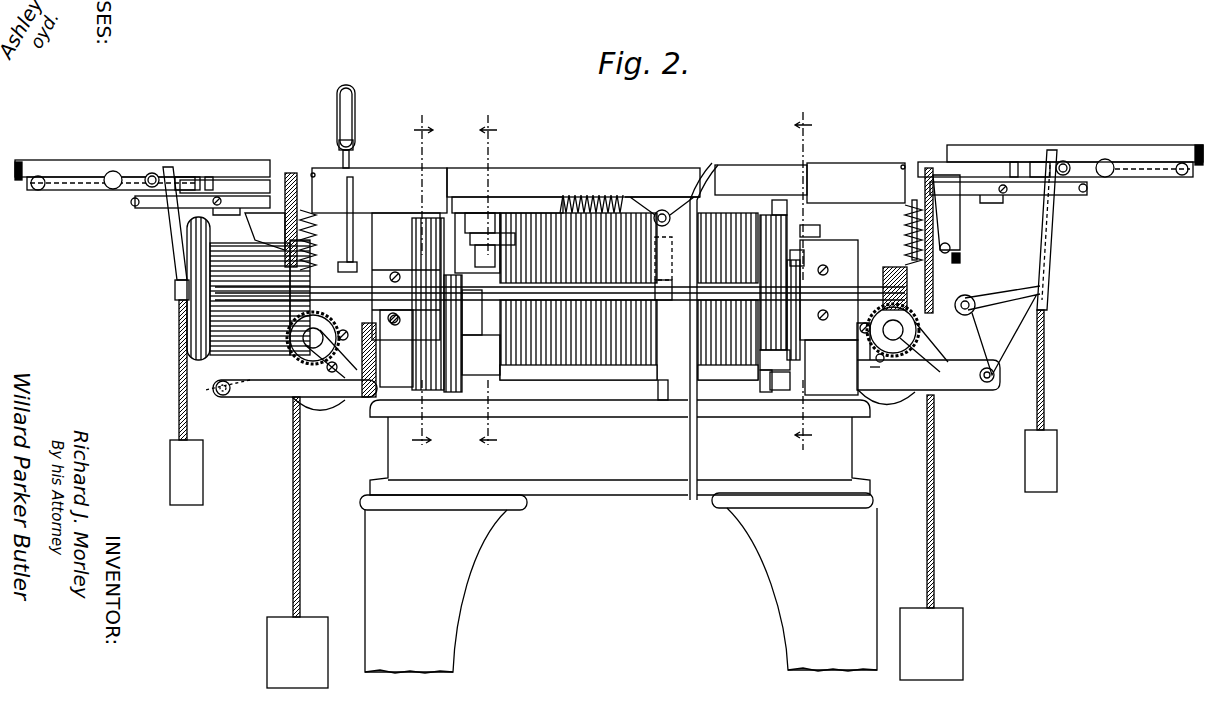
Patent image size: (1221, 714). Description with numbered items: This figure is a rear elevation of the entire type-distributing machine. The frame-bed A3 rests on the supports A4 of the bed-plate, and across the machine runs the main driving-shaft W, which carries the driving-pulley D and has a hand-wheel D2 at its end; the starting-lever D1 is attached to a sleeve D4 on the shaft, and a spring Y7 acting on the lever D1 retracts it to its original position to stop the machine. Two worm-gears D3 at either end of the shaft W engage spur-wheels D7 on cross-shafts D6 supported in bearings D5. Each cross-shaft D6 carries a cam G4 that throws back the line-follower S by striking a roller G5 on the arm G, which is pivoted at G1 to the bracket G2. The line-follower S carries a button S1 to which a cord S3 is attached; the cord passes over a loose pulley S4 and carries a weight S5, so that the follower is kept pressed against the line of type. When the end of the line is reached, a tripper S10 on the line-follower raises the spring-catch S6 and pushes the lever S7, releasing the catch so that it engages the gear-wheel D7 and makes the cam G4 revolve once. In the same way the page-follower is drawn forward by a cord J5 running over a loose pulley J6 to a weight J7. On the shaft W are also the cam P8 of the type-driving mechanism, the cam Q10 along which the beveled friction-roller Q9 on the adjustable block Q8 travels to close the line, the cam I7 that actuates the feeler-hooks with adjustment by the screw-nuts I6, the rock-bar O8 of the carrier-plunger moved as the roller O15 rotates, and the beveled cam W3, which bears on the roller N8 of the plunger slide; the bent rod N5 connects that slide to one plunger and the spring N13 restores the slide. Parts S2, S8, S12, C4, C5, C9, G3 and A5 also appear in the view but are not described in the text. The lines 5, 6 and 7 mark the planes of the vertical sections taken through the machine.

The line-follower S is at (250, 180).
The button S1 is at (36, 191).
The lower rail S2 is at (105, 192).
The cord S3 is at (87, 178).
The loose pulley S4 is at (183, 180).
The weight S5 is at (170, 468).
The spring-catch S6 is at (152, 172).
The lever S7 is at (262, 231).
The pivot S8 is at (951, 247).
The tripper S10 is at (212, 180).
The lever S12 is at (915, 377).
The pin C4 is at (131, 203).
The bar C5 is at (140, 210).
The bracket C9 is at (608, 202).
The arm G is at (167, 256).
The pivot G1 is at (233, 397).
The bracket G2 is at (290, 398).
The pivot G3 is at (220, 400).
The cam G4 is at (318, 410).
The roller G5 is at (1002, 330).
The driving-pulley D is at (250, 299).
The starting-lever D1 is at (338, 92).
The hand-wheel D2 is at (196, 270).
The worm-gear D3 is at (887, 267).
The sleeve D4 is at (360, 281).
The bearing D5 is at (368, 398).
The cross-shaft D6 is at (305, 346).
The spur-wheel D7 is at (335, 362).
The cord J5 is at (293, 502).
The loose pulley J6 is at (320, 253).
The weight J7 is at (278, 649).
The frame-bed A3 is at (616, 455).
The support A4 is at (621, 456).
The gear A5 is at (425, 225).
The bent rod N5 is at (722, 200).
The roller N8 is at (468, 222).
The spring N13 is at (607, 192).
The screw-nut I6 is at (664, 208).
The cam I7 is at (663, 380).
The adjustable block Q8 is at (490, 245).
The beveled friction-roller Q9 is at (505, 240).
The cam Q10 is at (470, 310).
The rock-bar O8 is at (450, 395).
The roller O15 is at (780, 392).
The cam P8 is at (457, 345).
The main driving-shaft W is at (960, 285).
The cam W3 is at (470, 360).
The spring Y7 is at (962, 258).
The section line 5 is at (422, 284).
The section line 6 is at (803, 283).
The section line 7 is at (487, 285).